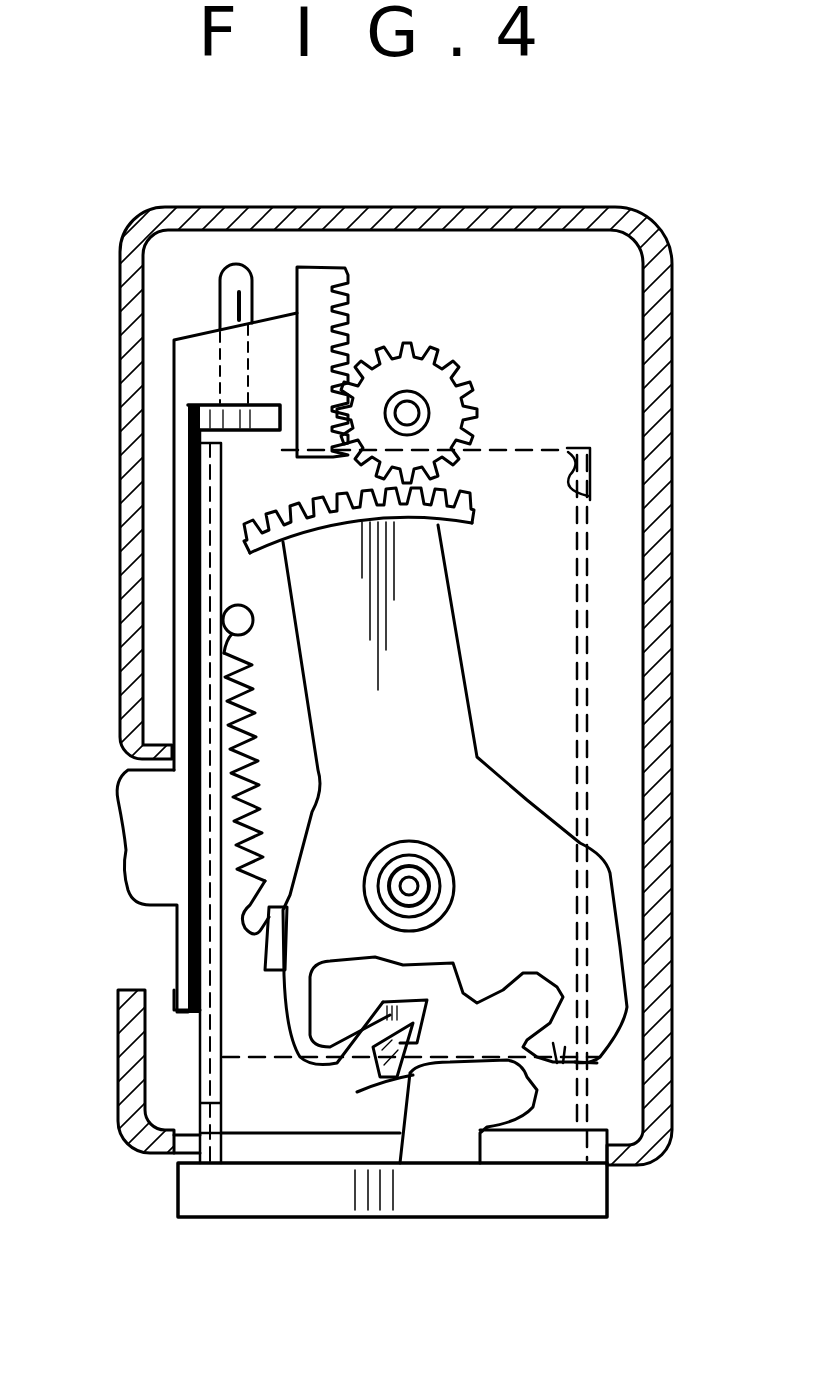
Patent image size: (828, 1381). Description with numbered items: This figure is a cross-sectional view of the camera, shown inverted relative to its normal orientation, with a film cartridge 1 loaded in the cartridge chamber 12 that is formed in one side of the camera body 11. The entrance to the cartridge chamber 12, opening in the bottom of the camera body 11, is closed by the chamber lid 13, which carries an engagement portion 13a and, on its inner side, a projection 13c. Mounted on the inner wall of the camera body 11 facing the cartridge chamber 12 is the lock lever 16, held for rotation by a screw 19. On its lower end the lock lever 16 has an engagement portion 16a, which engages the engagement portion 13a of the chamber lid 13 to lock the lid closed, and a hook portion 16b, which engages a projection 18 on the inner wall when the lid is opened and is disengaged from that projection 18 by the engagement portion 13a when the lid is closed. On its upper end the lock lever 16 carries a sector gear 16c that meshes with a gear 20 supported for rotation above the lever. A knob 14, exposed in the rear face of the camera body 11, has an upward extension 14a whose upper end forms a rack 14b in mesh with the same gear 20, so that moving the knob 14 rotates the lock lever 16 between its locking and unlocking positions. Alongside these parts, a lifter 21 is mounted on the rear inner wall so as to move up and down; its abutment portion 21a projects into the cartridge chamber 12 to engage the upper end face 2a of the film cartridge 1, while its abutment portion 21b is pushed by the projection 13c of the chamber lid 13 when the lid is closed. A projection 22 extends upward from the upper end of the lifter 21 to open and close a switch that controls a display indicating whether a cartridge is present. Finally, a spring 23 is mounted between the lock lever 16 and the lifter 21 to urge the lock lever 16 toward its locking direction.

The film cartridge 1 is at (555, 512).
The upper end face 2a is at (523, 447).
The camera body 11 is at (657, 903).
The cartridge chamber 12 is at (590, 495).
The chamber lid 13 is at (590, 1200).
The engagement portion 13a is at (527, 1107).
The projection 13c is at (157, 1153).
The knob 14 is at (145, 803).
The extension 14a is at (185, 447).
The rack 14b is at (322, 307).
The lock lever 16 is at (437, 653).
The engagement portion 16a is at (600, 1064).
The hook portion 16b is at (417, 1010).
The sector gear 16c is at (463, 513).
The projection 18 is at (387, 1060).
The screw 19 is at (411, 887).
The gear 20 is at (447, 367).
The lifter 21 is at (206, 694).
The abutment portion 21a is at (200, 403).
The abutment portion 21b is at (199, 1046).
The projection 22 is at (232, 297).
The spring 23 is at (257, 777).